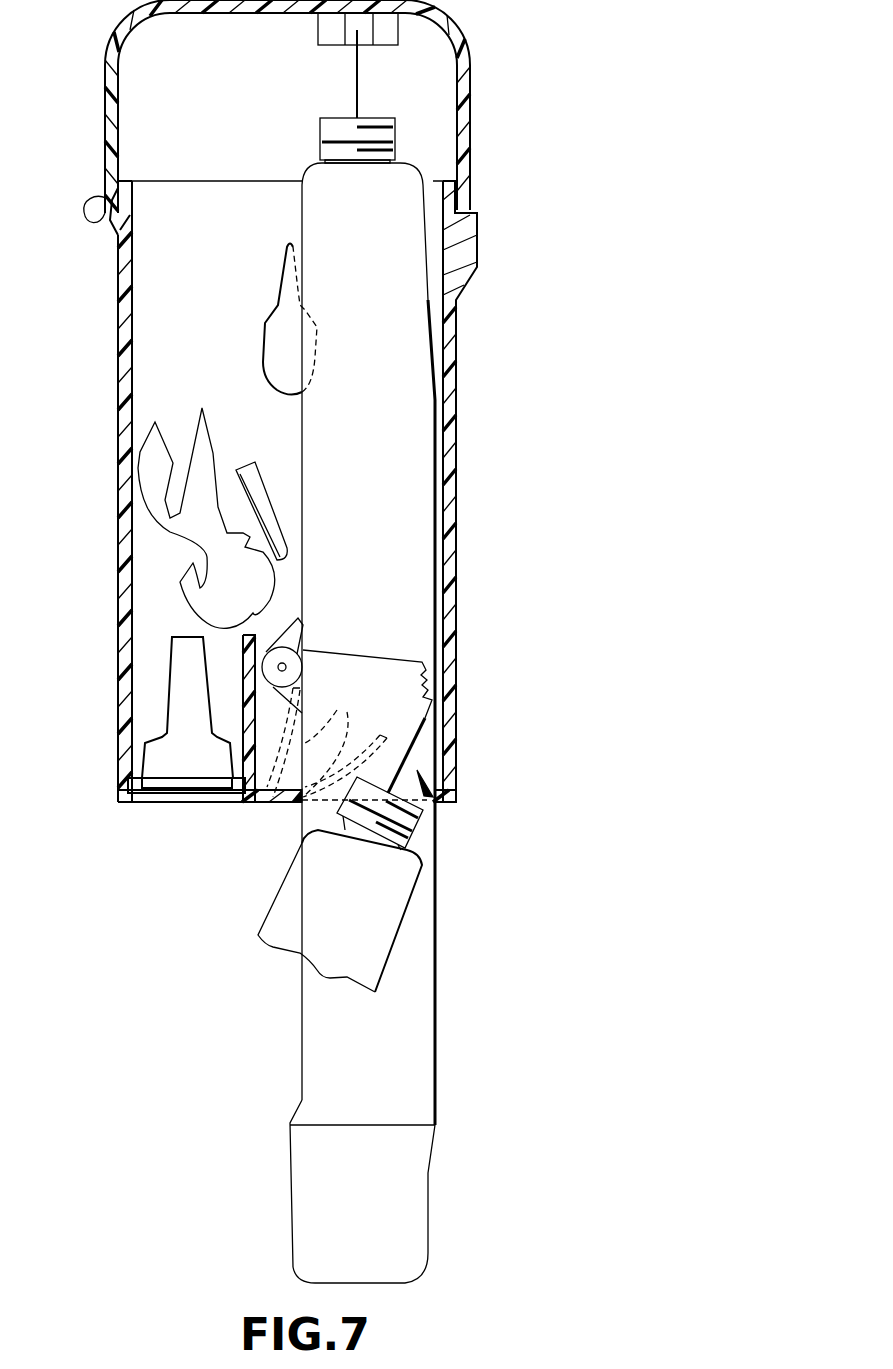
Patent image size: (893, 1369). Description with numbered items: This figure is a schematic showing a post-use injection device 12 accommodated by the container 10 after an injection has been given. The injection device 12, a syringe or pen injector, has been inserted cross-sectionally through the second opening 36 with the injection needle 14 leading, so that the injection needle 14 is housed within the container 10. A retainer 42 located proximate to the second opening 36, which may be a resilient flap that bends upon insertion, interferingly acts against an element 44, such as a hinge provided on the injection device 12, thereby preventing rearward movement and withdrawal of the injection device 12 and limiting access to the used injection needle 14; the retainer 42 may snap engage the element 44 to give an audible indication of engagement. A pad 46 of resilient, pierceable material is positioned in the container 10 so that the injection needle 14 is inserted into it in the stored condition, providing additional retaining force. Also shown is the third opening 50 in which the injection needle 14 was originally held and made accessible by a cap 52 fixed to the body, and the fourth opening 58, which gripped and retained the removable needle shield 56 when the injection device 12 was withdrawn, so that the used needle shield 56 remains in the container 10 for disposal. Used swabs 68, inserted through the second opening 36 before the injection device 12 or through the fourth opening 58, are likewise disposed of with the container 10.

The container 10 is at (488, 56).
The injection device 12 is at (431, 510).
The injection needle 14 is at (358, 75).
The second opening 36 is at (433, 798).
The retainer 42 is at (343, 710).
The element 44 is at (293, 643).
The pad 46 is at (328, 30).
The third opening 50 is at (158, 797).
The cap 52 is at (165, 675).
The needle shield 56 is at (241, 456).
The fourth opening 58 is at (290, 319).
The used swabs 68 is at (147, 478).